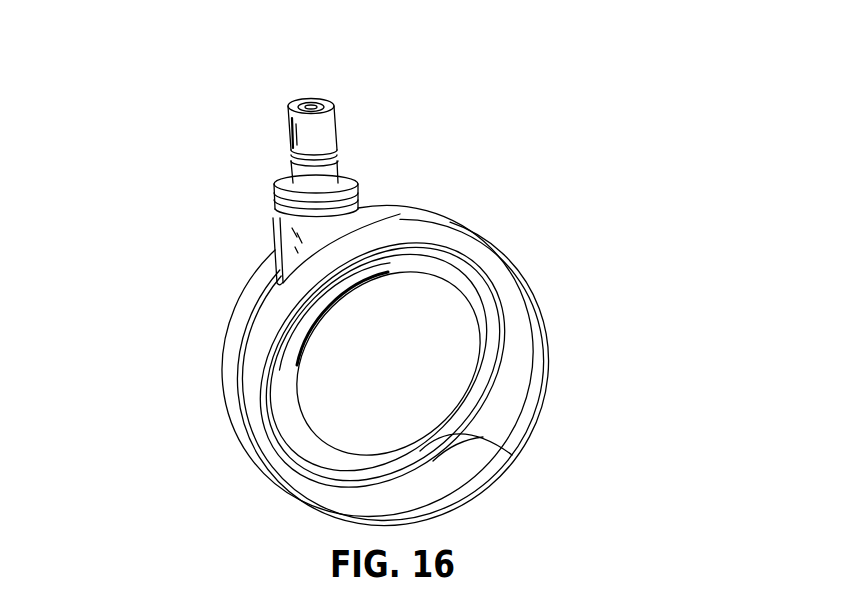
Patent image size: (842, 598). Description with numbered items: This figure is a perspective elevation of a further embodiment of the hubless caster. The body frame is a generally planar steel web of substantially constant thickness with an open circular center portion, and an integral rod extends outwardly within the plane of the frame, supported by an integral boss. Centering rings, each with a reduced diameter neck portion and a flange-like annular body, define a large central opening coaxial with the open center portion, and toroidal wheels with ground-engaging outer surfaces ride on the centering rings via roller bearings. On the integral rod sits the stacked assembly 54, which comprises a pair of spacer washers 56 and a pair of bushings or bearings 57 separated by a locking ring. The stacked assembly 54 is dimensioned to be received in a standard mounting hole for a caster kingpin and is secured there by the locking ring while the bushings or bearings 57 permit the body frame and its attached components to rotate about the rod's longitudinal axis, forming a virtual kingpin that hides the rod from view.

The stacked assembly 54 is at (218, 100).
The bushings or bearings 57 is at (340, 160).
The spacer washers 56 is at (274, 190).